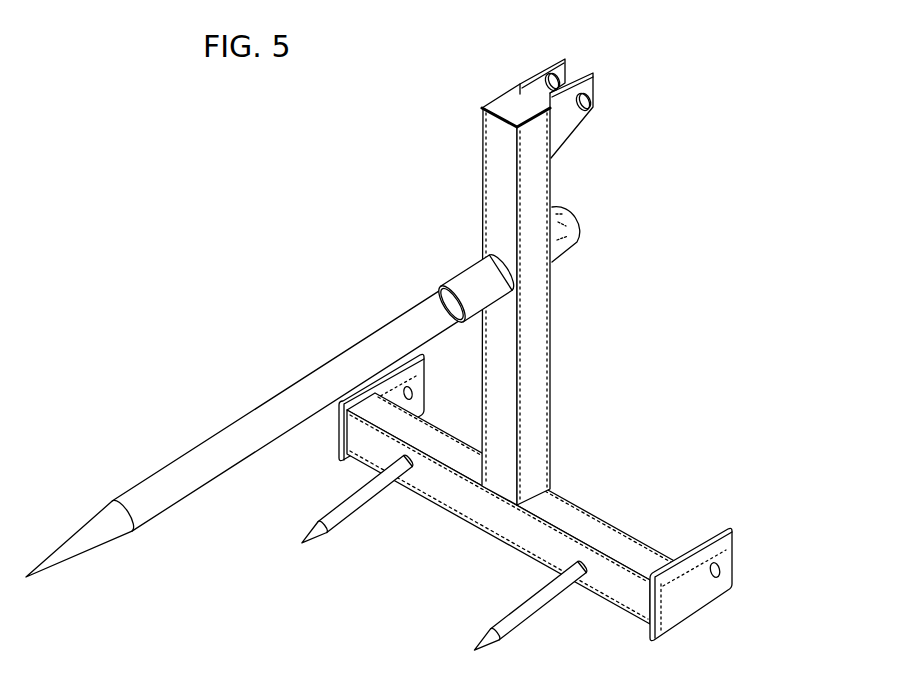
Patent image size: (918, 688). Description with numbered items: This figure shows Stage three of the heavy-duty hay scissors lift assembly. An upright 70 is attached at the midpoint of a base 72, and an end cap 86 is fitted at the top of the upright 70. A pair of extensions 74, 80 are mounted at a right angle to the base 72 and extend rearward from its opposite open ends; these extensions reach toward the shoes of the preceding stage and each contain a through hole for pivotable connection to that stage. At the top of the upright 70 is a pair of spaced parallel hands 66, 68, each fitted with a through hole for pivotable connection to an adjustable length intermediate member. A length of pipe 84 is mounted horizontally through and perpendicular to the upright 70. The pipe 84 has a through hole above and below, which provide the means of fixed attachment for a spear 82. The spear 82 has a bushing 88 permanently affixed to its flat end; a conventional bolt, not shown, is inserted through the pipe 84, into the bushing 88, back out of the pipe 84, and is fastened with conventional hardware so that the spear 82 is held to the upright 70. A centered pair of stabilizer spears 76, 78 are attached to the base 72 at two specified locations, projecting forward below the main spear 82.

The hand 66 is at (541, 75).
The hand 68 is at (598, 83).
The upright 70 is at (542, 180).
The base 72 is at (587, 512).
The extension 74 is at (733, 553).
The stabilizer spear 76 is at (530, 598).
The stabilizer spear 78 is at (345, 518).
The extension 80 is at (350, 448).
The spear 82 is at (367, 343).
The pipe 84 is at (490, 262).
The end cap 86 is at (500, 98).
The bushing 88 is at (592, 220).